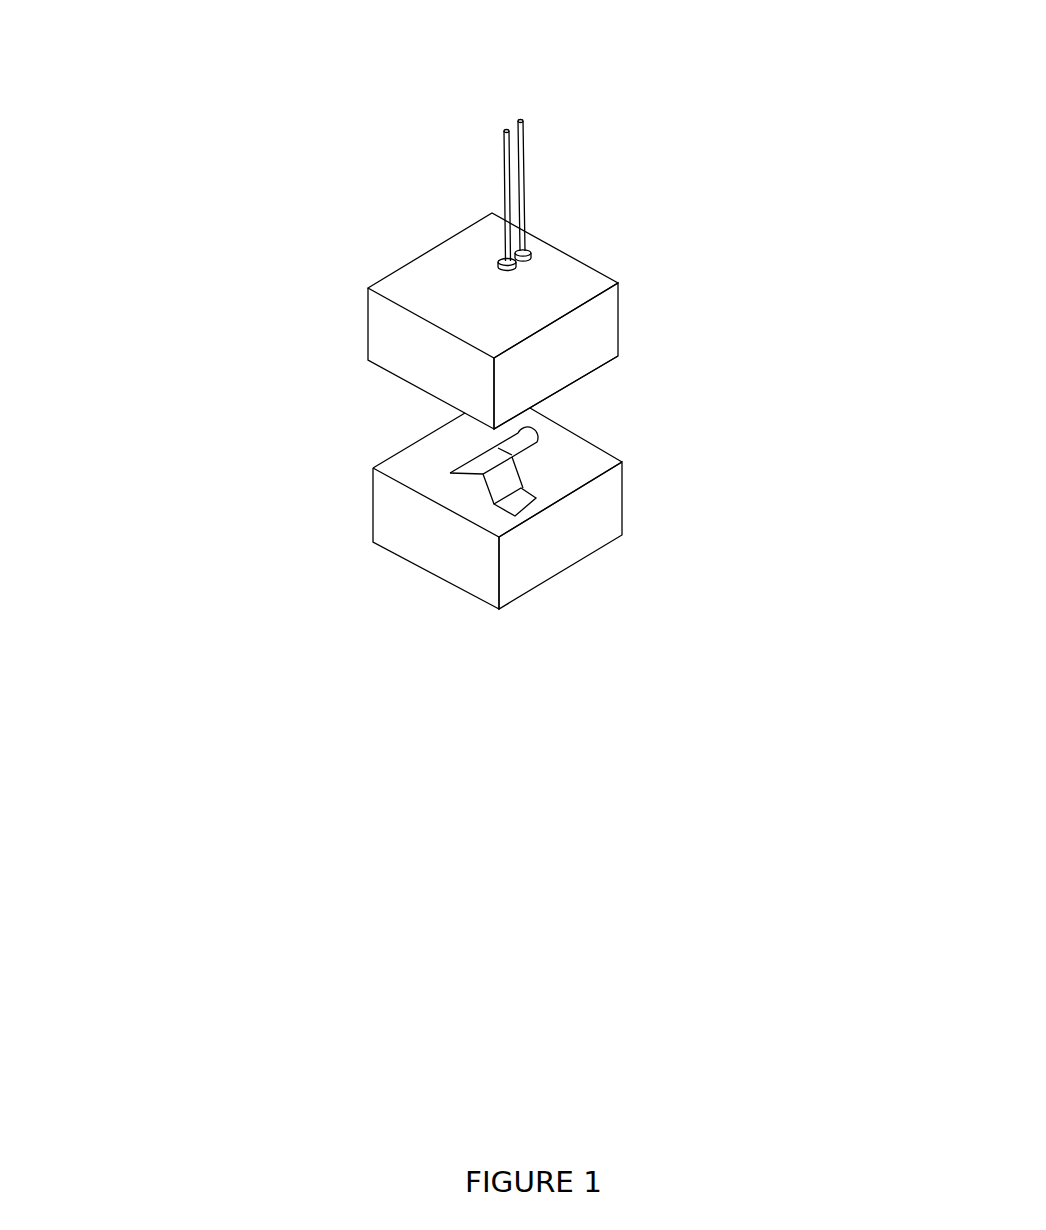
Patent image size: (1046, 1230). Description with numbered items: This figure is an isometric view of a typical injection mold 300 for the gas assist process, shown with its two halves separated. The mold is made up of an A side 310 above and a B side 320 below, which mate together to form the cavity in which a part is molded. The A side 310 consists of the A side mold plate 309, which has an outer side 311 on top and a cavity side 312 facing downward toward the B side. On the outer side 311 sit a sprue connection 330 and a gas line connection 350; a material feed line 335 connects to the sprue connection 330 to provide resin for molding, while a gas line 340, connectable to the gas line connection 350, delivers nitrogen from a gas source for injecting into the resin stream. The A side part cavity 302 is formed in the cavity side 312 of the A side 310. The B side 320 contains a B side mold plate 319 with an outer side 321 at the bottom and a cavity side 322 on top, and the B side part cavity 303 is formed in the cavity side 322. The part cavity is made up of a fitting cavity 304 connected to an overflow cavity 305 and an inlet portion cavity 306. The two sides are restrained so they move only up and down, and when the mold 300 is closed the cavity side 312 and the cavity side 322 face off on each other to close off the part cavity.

The injection mold 300 is at (217, 640).
The A side part cavity 302 is at (405, 397).
The B side part cavity 303 is at (455, 457).
The fitting cavity 304 is at (473, 477).
The overflow cavity 305 is at (512, 500).
The inlet portion cavity 306 is at (515, 442).
The A side mold plate 309 is at (622, 317).
The A side 310 is at (727, 240).
The outer side of the A side 311 is at (427, 282).
The cavity side of the A side 312 is at (607, 365).
The B side mold plate 319 is at (625, 505).
The B side 320 is at (720, 648).
The outer side of the B side 321 is at (597, 563).
The cavity side of the B side 322 is at (590, 457).
The sprue connection 330 is at (542, 253).
The material feed line 335 is at (530, 150).
The gas line 340 is at (503, 148).
The gas line connection 350 is at (493, 254).